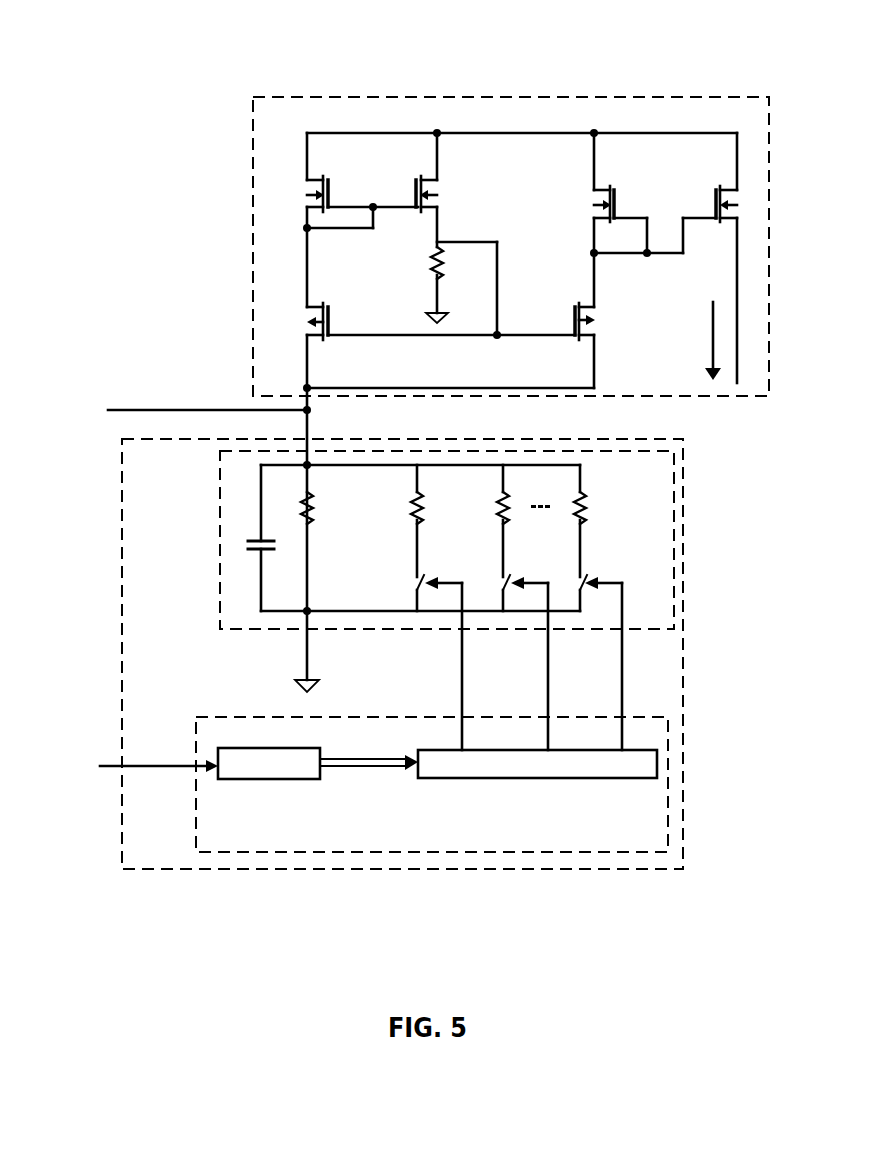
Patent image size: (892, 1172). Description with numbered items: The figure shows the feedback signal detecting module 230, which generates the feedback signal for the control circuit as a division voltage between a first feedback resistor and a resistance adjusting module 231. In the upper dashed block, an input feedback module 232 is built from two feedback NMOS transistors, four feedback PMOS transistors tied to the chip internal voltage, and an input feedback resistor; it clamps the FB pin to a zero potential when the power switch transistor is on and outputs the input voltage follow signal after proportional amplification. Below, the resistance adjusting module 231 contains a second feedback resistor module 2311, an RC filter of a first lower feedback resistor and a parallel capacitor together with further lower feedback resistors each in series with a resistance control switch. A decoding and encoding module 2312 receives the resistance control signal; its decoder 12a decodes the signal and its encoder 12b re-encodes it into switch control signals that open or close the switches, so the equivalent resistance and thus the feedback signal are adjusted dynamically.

The feedback signal detecting module 230 is at (438, 23).
The input feedback module 232 is at (240, 231).
The resistance adjusting module 231 is at (462, 870).
The second feedback resistor module 2311 is at (220, 548).
The decoding and encoding module 2312 is at (197, 717).
The decoder 12a is at (281, 779).
The encoder 12b is at (534, 778).